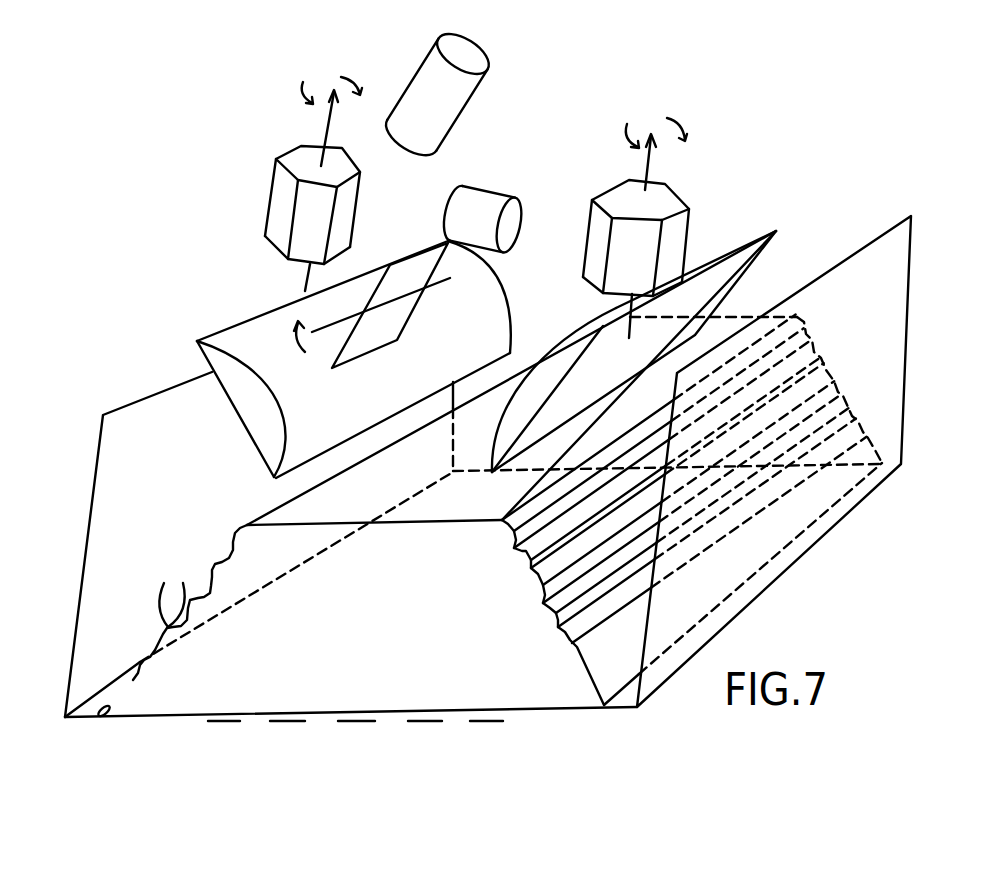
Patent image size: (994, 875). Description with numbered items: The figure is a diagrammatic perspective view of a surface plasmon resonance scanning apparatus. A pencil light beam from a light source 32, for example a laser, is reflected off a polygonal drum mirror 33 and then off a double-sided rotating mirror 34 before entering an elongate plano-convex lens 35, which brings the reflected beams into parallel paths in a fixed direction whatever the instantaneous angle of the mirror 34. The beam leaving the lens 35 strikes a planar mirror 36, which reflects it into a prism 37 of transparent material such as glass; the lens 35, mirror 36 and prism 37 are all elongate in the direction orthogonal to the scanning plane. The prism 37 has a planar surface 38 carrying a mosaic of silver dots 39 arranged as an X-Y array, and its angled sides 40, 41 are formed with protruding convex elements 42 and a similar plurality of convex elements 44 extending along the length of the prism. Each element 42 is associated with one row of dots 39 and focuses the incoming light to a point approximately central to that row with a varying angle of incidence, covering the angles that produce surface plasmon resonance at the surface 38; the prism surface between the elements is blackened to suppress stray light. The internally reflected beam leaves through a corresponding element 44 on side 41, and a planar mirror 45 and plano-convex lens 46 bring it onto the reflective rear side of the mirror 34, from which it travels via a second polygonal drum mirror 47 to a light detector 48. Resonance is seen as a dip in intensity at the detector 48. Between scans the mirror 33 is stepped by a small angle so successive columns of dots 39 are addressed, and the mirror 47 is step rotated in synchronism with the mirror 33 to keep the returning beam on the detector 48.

The light source 32 is at (458, 89).
The polygonal drum mirror 33 is at (277, 199).
The double-sided rotating mirror 34 is at (377, 327).
The plano-convex lens 35 is at (240, 397).
The planar mirror 36 is at (135, 464).
The prism 37 is at (291, 502).
The planar surface 38 is at (570, 710).
The silver dots 39 is at (235, 720).
The side of prism 40 is at (93, 717).
The side of prism 41 is at (605, 670).
The protruding convex elements 42 is at (212, 565).
The convex elements 44 is at (558, 498).
The planar mirror 45 is at (892, 244).
The plano-convex lens 46 is at (507, 430).
The second polygonal drum mirror 47 is at (676, 238).
The light detector 48 is at (484, 215).